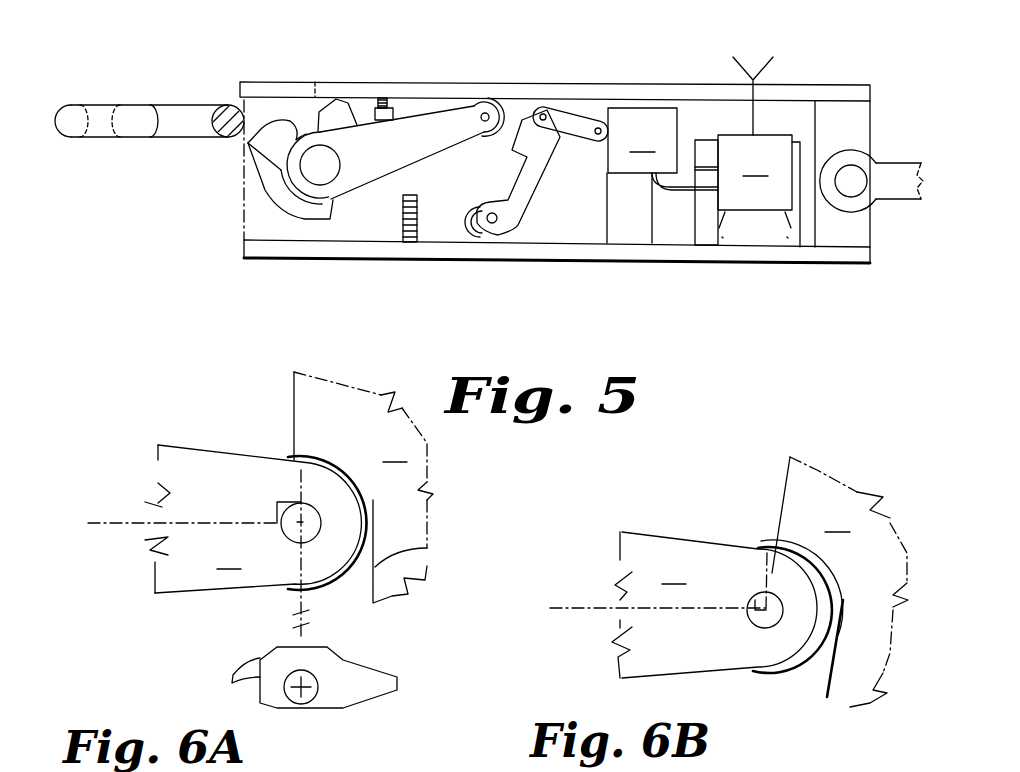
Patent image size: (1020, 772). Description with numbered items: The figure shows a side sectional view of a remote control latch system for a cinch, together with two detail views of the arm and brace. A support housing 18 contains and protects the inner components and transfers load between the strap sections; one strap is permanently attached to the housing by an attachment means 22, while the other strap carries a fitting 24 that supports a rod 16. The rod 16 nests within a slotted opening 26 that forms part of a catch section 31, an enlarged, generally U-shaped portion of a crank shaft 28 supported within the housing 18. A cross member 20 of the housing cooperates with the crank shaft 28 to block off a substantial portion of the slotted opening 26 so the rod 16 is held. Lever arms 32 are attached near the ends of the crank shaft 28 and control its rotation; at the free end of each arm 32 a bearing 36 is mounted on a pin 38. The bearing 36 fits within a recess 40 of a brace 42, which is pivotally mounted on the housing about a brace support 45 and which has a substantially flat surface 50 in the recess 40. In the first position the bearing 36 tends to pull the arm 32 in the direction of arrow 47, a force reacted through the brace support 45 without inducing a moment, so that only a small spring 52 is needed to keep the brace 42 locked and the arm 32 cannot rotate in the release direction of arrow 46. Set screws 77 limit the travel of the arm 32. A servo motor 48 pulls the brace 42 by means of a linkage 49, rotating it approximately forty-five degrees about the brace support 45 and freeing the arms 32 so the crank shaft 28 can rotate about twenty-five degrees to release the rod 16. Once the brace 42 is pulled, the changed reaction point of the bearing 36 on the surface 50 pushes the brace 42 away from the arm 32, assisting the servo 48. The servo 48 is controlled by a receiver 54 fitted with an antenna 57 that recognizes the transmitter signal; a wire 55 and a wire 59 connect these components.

In FIG. 5, the rod 16 is at (226, 104).
In FIG. 5, the support housing 18 is at (700, 250).
In FIG. 5, the cross member 20 is at (260, 81).
In FIG. 5, the attachment means 22 is at (907, 163).
In FIG. 5, the fitting 24 is at (102, 140).
In FIG. 5, the slotted opening 26 is at (252, 135).
In FIG. 5, the crank shaft 28 is at (320, 187).
In FIG. 5, the catch section 31 is at (283, 193).
In FIG. 5, the lever arm 32 is at (445, 106).
In FIG. 6A, the lever arm 32 is at (253, 519).
In FIG. 6B, the lever arm 32 is at (714, 605).
In FIG. 5, the bearing 36 is at (505, 110).
In FIG. 6A, the bearing 36 is at (340, 590).
In FIG. 6B, the bearing 36 is at (792, 673).
In FIG. 5, the pin 38 is at (479, 107).
In FIG. 6A, the pin 38 is at (290, 540).
In FIG. 6B, the pin 38 is at (748, 617).
In FIG. 5, the recess 40 is at (560, 140).
In FIG. 6A, the recess 40 is at (427, 548).
In FIG. 6B, the recess 40 is at (838, 648).
In FIG. 6A, the brace 42 is at (397, 692).
In FIG. 6B, the brace 42 is at (849, 582).
In FIG. 6A, the brace support 45 is at (320, 688).
In FIG. 5, the arrow indicating release direction 46 is at (437, 160).
In FIG. 6A, the arrow indicating release direction 46 is at (177, 427).
In FIG. 6B, the arrow indicating release direction 46 is at (658, 527).
In FIG. 6A, the arrow indicating force direction 47 is at (300, 493).
In FIG. 5, the servo motor 48 is at (642, 175).
In FIG. 5, the linkage 49 is at (590, 120).
In FIG. 5, the substantially flat surface 50 is at (523, 157).
In FIG. 6A, the substantially flat surface 50 is at (307, 460).
In FIG. 6B, the substantially flat surface 50 is at (767, 545).
In FIG. 5, the spring 52 is at (455, 240).
In FIG. 6A, the spring 52 is at (231, 674).
In FIG. 5, the receiver 54 is at (759, 191).
In FIG. 5, the wire 55 is at (708, 142).
In FIG. 5, the antenna 57 is at (754, 117).
In FIG. 5, the wire 59 is at (668, 195).
In FIG. 5, the set screw 77 is at (388, 102).